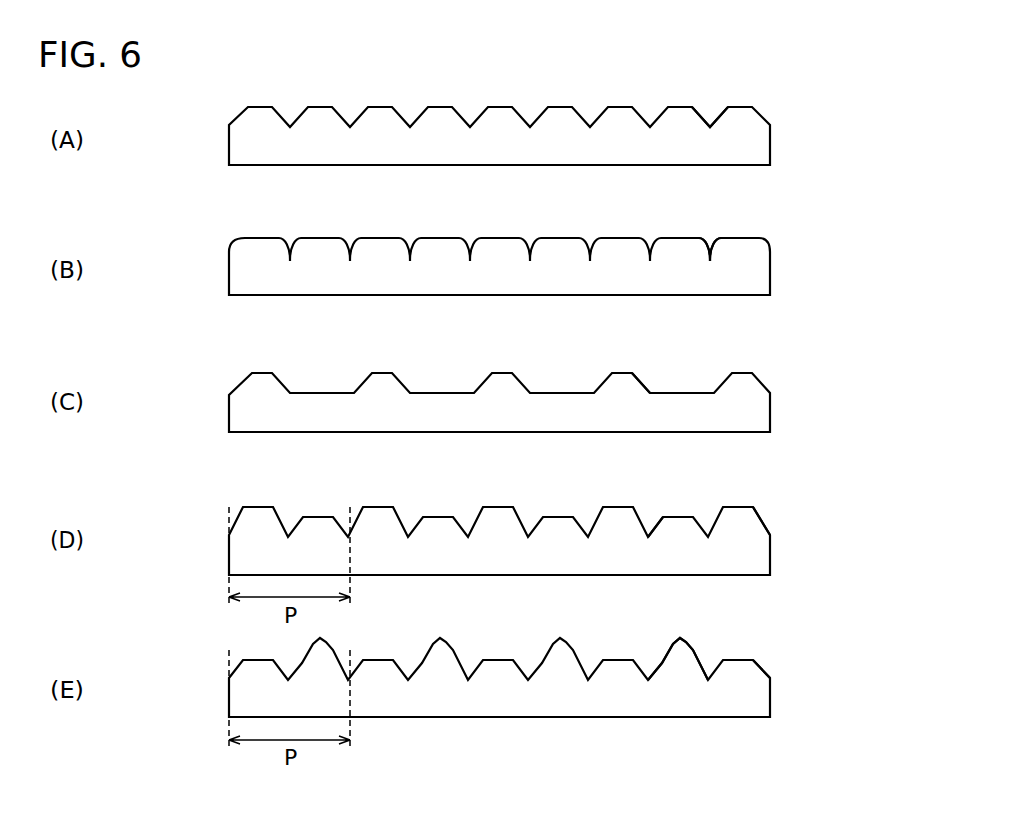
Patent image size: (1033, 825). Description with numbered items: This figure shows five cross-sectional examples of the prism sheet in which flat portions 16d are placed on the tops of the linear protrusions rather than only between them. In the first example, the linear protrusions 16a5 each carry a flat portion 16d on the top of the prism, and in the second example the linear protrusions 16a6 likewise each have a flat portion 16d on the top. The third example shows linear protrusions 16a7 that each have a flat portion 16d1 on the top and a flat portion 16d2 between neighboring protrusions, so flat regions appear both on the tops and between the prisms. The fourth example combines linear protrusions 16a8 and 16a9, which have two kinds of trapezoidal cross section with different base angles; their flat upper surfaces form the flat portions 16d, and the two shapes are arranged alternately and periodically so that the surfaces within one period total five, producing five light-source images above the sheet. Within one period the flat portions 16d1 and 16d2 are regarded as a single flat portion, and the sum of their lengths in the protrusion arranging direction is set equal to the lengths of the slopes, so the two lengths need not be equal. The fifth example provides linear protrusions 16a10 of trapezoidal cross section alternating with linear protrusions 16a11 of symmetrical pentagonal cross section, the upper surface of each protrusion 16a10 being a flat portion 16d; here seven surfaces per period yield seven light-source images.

The flat portion 16d is at (617, 107).
The linear protrusions 16a5 is at (703, 120).
The linear protrusions 16a6 is at (708, 245).
The flat portion 16d1 is at (618, 373).
The flat portion 16d2 is at (559, 393).
The linear protrusions 16a7 is at (644, 386).
The linear protrusions 16a8 is at (779, 512).
The linear protrusions 16a9 is at (657, 504).
The linear protrusions 16a10 is at (777, 668).
The linear protrusions 16a11 is at (668, 625).